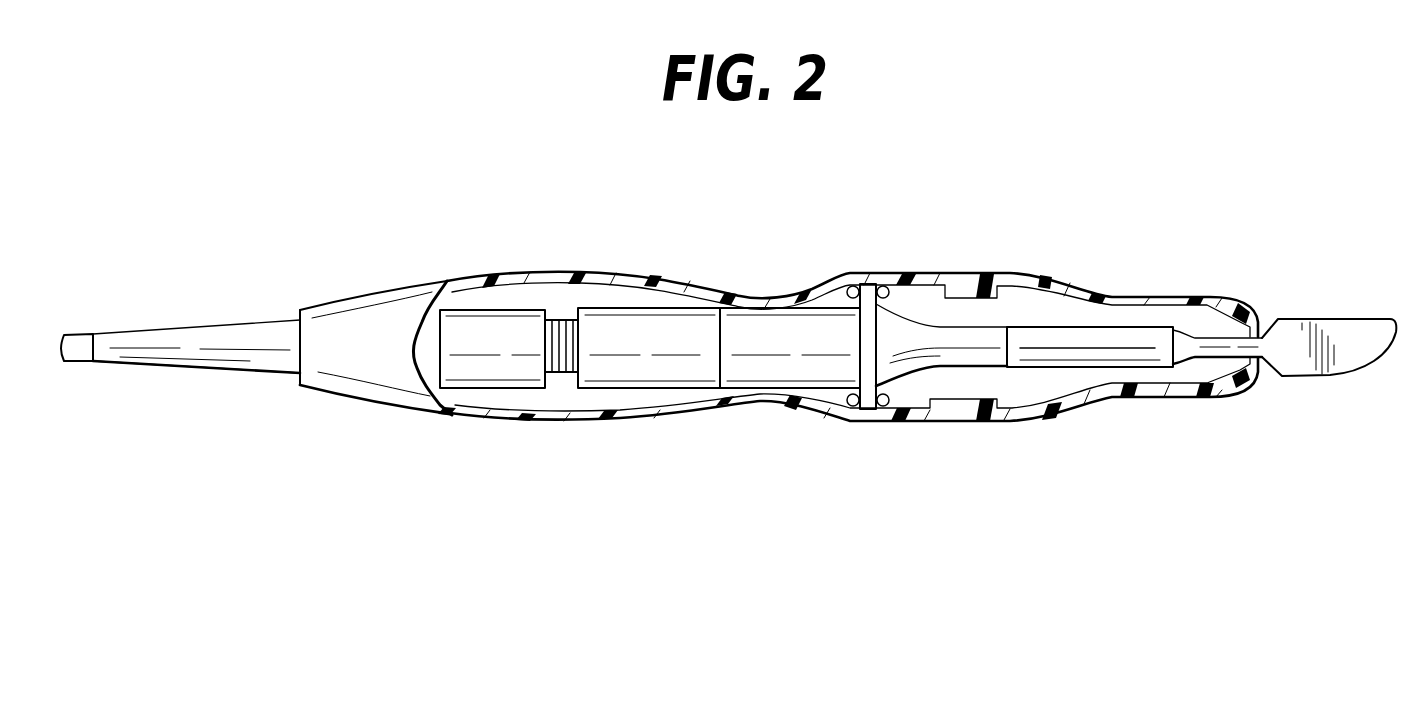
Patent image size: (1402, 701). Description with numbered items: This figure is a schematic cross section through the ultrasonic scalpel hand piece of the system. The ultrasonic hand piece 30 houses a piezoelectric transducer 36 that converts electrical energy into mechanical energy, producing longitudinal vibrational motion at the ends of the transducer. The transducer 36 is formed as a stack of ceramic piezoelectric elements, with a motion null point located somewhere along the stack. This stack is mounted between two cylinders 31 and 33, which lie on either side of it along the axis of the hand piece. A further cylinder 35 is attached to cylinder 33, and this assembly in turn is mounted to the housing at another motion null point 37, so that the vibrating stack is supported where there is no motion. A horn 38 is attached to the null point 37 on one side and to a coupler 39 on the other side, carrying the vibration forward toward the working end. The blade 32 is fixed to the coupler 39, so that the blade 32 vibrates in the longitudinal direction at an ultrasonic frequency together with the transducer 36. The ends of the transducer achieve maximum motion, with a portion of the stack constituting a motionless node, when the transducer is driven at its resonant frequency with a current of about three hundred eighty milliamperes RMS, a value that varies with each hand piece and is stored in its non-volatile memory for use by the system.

The ultrasonic hand piece 30 is at (741, 268).
The cylinder 31 is at (470, 322).
The blade 32 is at (1338, 338).
The cylinder 33 is at (647, 362).
The cylinder 35 is at (772, 362).
The piezoelectric transducer 36 is at (558, 318).
The motion null point 37 is at (877, 284).
The horn 38 is at (918, 334).
The coupler 39 is at (1093, 342).